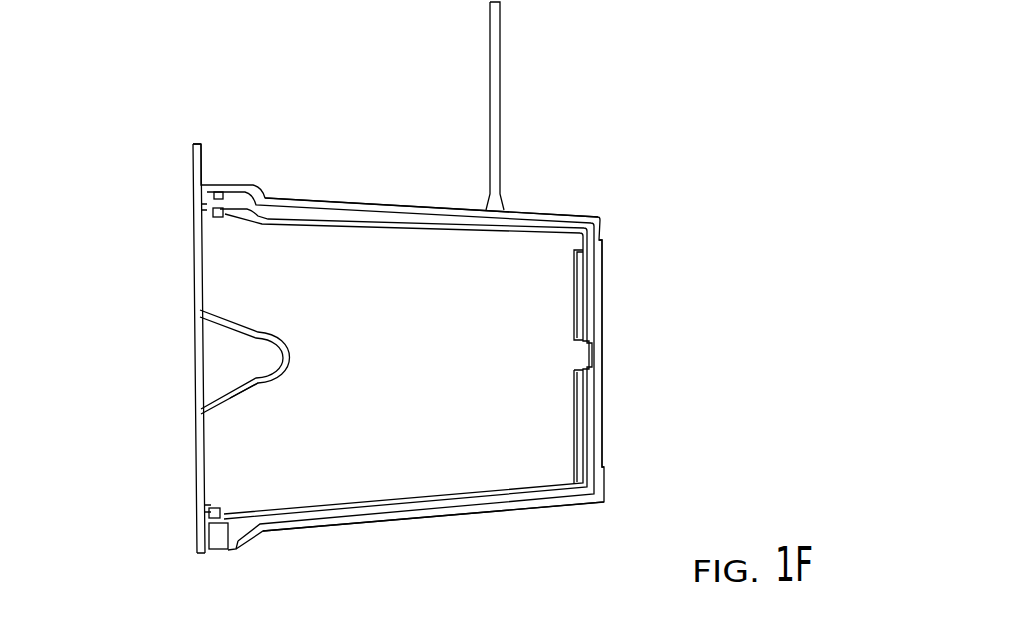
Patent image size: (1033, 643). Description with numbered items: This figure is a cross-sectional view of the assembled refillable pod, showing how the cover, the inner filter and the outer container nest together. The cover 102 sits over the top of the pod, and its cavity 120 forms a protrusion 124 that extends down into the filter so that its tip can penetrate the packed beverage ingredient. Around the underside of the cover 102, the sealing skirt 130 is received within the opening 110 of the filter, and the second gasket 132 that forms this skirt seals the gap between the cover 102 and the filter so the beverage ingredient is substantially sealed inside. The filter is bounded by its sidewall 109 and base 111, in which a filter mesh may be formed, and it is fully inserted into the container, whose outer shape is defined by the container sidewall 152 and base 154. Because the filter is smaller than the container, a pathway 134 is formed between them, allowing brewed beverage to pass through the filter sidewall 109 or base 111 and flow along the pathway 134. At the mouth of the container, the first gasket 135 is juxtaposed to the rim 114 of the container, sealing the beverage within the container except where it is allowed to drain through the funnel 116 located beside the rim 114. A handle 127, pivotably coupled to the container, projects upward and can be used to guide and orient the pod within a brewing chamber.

The cover 102 is at (186, 286).
The sidewall of the filter 109 is at (357, 222).
The opening of the filter 110 is at (230, 512).
The base of the filter 111 is at (575, 302).
The rim of the container 114 is at (205, 163).
The funnel 116 is at (240, 538).
The cavity 120 is at (237, 358).
The protrusion 124 is at (250, 392).
The handle 127 is at (510, 96).
The sealing skirt 130 is at (215, 217).
The second gasket 132 is at (207, 208).
The pathway 134 is at (540, 212).
The first gasket 135 is at (221, 186).
The sidewall of the container 152 is at (392, 205).
The base of the container 154 is at (602, 275).